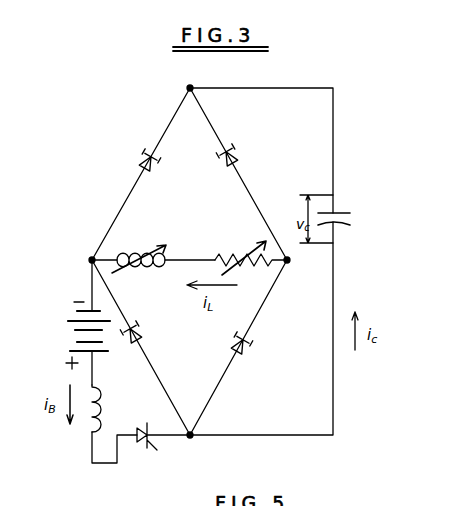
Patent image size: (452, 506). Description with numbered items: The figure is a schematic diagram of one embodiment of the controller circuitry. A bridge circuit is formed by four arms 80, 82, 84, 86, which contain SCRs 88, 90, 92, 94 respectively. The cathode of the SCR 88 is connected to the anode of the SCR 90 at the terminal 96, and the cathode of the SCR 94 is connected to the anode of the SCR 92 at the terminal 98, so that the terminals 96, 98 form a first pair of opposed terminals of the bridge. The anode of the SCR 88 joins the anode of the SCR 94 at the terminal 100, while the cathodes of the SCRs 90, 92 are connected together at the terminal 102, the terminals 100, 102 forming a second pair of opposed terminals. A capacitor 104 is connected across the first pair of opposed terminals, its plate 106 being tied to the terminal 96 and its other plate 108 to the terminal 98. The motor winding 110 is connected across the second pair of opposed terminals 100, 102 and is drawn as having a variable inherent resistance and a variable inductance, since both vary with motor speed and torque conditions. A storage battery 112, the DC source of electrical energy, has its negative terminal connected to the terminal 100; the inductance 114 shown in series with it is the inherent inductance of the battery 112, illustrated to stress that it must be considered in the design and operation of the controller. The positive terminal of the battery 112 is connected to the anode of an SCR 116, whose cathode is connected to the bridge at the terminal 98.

The bridge circuit arm 80 is at (120, 211).
The bridge circuit arm 82 is at (262, 212).
The bridge circuit arm 84 is at (261, 312).
The bridge circuit arm 86 is at (134, 329).
The SCR 88 is at (147, 153).
The SCR 90 is at (240, 152).
The SCR 92 is at (244, 353).
The SCR 94 is at (141, 335).
The terminal 96 is at (193, 87).
The terminal 98 is at (193, 440).
The terminal 100 is at (90, 258).
The terminal 102 is at (289, 264).
The capacitor 104 is at (365, 226).
The capacitor plate 106 is at (337, 212).
The capacitor plate 108 is at (340, 228).
The motor winding 110 is at (235, 247).
The storage battery 112 is at (68, 333).
The inductance 114 is at (99, 410).
The SCR 116 is at (136, 446).